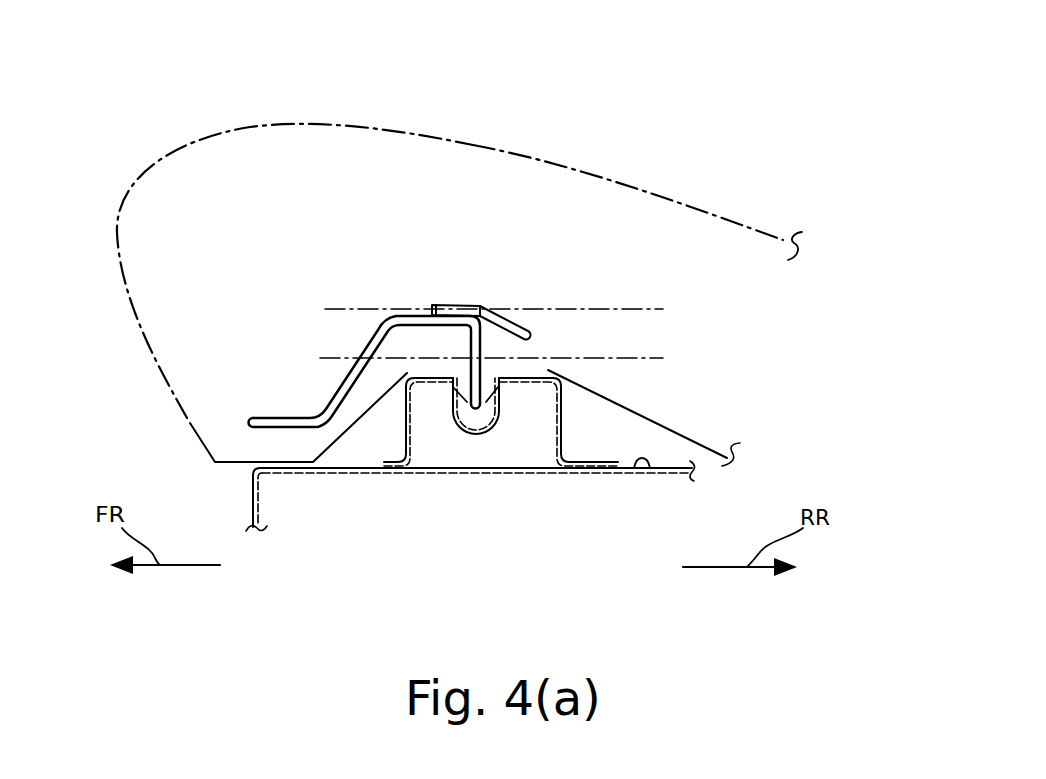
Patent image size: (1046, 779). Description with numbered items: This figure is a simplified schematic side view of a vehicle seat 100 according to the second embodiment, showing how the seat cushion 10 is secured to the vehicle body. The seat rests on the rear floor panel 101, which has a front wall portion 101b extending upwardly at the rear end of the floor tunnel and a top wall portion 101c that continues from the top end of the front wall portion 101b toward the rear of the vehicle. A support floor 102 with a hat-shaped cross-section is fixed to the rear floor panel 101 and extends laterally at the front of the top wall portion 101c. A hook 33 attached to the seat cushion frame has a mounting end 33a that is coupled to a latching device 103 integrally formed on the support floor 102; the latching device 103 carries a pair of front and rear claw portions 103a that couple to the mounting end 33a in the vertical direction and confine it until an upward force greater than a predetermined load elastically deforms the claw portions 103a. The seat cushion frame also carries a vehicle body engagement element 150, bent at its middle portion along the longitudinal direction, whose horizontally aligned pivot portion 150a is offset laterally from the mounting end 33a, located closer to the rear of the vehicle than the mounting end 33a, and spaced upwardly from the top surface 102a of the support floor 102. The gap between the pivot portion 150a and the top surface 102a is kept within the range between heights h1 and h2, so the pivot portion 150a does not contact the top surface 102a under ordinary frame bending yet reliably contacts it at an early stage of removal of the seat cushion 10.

The seat cushion 10 is at (474, 146).
The vehicle seat 100 is at (637, 180).
The rear floor panel 101 is at (667, 467).
The front wall portion 101b is at (250, 503).
The top wall portion 101c is at (653, 474).
The support floor 102 is at (403, 438).
The top surface 102a is at (556, 375).
The latching device 103 is at (492, 438).
The claw portions 103a is at (488, 407).
The vehicle body engagement element 150 is at (458, 305).
The pivot portion 150a is at (532, 335).
The hook 33 is at (335, 384).
The mounting end 33a is at (469, 420).
The height h1 is at (657, 358).
The height h2 is at (635, 309).